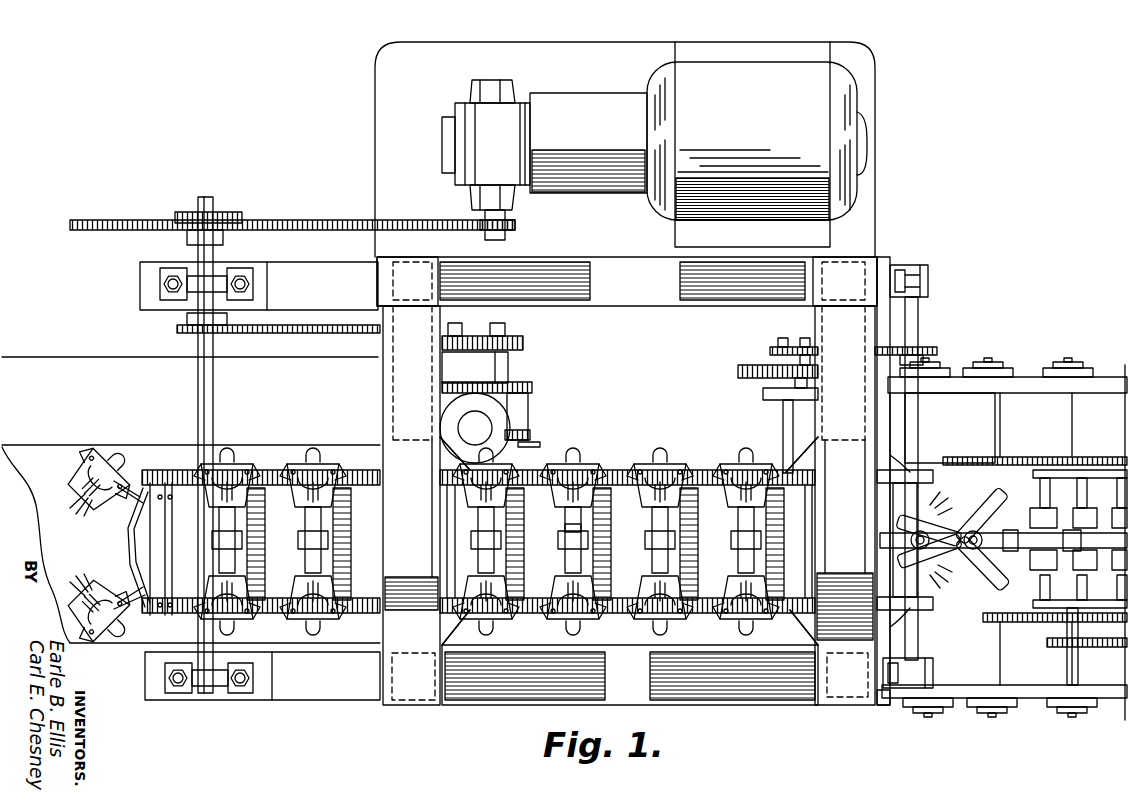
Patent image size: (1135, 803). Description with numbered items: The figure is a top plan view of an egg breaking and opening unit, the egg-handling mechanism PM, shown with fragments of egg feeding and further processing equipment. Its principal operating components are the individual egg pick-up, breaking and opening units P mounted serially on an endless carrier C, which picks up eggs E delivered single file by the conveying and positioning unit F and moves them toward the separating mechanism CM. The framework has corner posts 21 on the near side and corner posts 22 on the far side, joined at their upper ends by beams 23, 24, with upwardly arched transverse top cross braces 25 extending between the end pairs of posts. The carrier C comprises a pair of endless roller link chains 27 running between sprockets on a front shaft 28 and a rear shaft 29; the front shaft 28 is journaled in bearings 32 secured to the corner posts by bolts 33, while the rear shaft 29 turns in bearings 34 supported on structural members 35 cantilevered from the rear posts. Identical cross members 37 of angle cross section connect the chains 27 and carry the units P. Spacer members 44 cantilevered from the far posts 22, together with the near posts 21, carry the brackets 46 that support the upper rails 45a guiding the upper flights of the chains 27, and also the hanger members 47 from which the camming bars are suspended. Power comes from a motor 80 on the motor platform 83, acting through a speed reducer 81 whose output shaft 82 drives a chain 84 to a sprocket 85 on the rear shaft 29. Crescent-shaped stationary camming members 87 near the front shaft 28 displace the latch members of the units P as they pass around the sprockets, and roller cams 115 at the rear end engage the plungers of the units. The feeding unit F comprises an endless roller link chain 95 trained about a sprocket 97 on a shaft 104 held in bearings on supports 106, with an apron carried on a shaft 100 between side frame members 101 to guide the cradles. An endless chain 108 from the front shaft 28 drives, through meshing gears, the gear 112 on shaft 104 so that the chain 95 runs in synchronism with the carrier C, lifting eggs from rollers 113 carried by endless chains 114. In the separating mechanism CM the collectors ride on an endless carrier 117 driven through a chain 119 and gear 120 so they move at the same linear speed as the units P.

The corner post 21 is at (418, 705).
The corner post 22 is at (432, 264).
The beam 23 is at (690, 705).
The beam 24 is at (648, 306).
The transverse top cross brace 25 is at (386, 553).
The endless roller link chain 27 is at (605, 525).
The front shaft 28 is at (918, 420).
The rear shaft 29 is at (214, 430).
The bearing 32 is at (930, 276).
The bolt 33 is at (893, 705).
The bearing 34 is at (180, 268).
The structural member 35 is at (305, 262).
The cross member 37 is at (302, 540).
The spacer member 44 is at (790, 347).
The upper guide rail 45a is at (612, 470).
The bracket 46 is at (800, 450).
The hanger member 47 is at (440, 530).
The motor 80 is at (866, 107).
The speed reducer 81 is at (457, 118).
The output shaft 82 is at (508, 218).
The motor platform 83 is at (375, 70).
The drive chain 84 is at (312, 220).
The sprocket 85 is at (228, 212).
The stationary camming member 87 is at (918, 447).
The endless roller link chain 95 is at (1000, 565).
The sprocket 97 is at (1078, 675).
The shaft 100 is at (935, 660).
The side frame member 101 is at (1040, 365).
The shaft 104 is at (783, 415).
The support 106 is at (763, 395).
The endless chain 108 is at (900, 351).
The gear 112 is at (738, 372).
The roller 113 is at (1050, 570).
The endless chain 114 is at (1030, 470).
The roller cam 115 is at (490, 455).
The endless carrier 117 is at (533, 385).
The chain 119 is at (282, 333).
The gear 120 is at (525, 343).
The separating mechanism CM is at (28, 352).
The egg pick-up, breaking and opening unit P is at (108, 445).
The endless carrier C is at (690, 465).
The conveying and positioning unit F is at (1056, 360).
The egg E is at (1080, 460).
The egg-handling mechanism PM is at (777, 705).